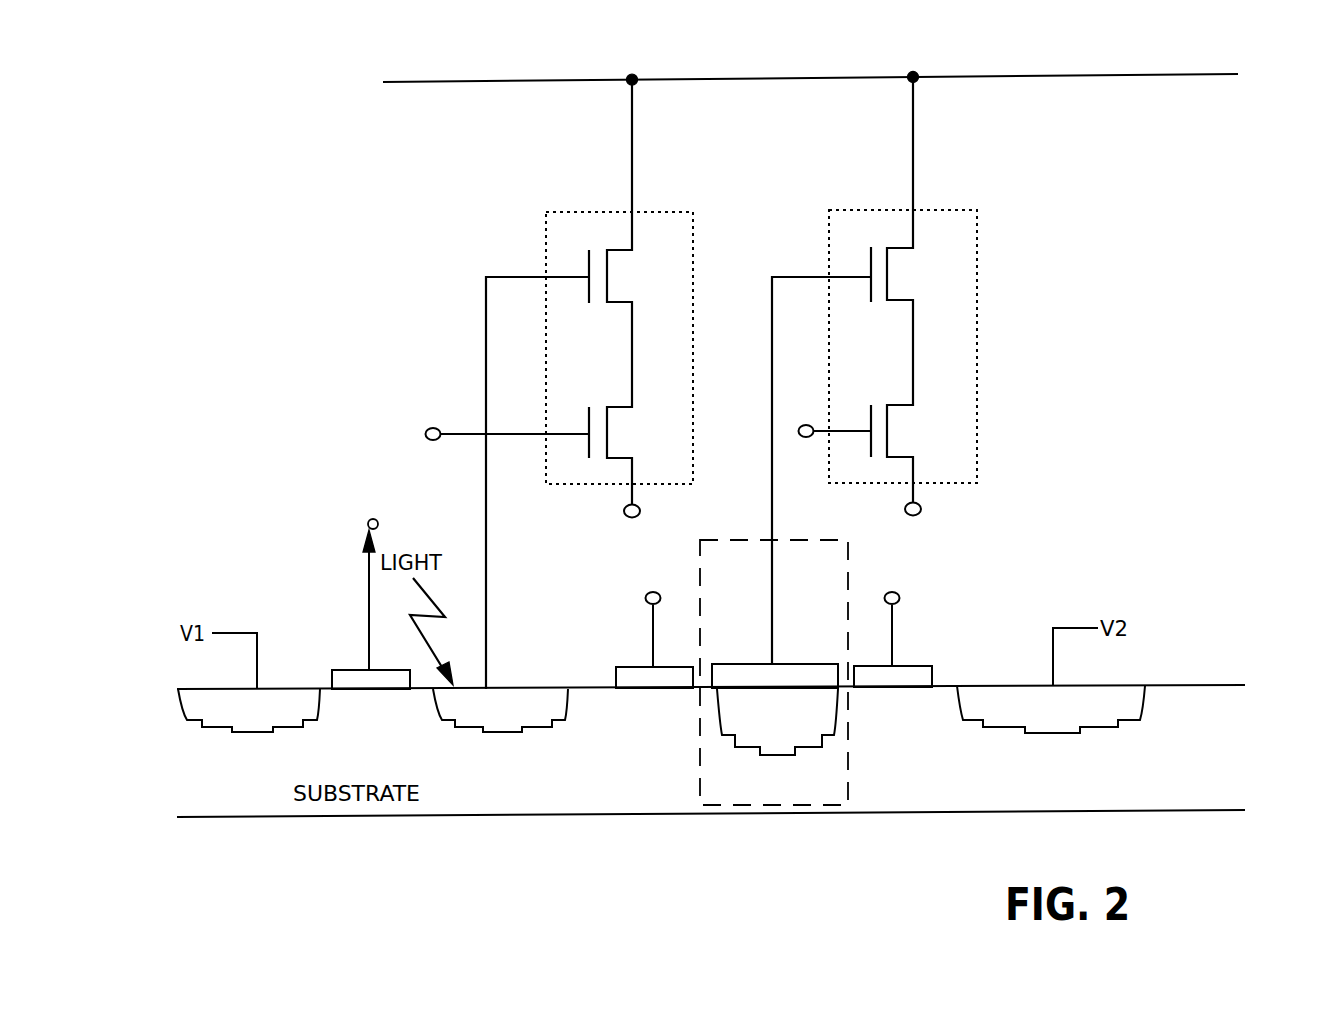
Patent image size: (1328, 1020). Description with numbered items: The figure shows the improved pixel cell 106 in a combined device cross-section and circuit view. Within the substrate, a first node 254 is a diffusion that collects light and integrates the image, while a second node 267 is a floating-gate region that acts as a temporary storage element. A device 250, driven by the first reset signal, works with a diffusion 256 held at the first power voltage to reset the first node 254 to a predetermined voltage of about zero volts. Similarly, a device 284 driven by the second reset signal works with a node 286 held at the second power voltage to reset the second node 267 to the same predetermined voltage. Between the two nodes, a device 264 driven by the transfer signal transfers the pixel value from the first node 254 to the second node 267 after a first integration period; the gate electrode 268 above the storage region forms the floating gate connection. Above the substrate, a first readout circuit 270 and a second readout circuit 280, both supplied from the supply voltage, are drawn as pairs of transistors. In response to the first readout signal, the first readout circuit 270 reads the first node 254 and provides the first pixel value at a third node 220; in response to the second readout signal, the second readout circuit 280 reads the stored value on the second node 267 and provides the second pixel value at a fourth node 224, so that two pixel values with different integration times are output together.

The pixel cell 106 is at (774, 80).
The third node 220 is at (640, 494).
The fourth node 224 is at (920, 492).
The device 250 is at (330, 680).
The first node 254 is at (506, 734).
The diffusion 256 is at (258, 733).
The device 264 is at (614, 678).
The second node 267 is at (776, 757).
The floating gate electrode FG 268 is at (720, 663).
The first readout circuit 270 is at (693, 226).
The second readout circuit 280 is at (977, 224).
The device 284 is at (918, 666).
The node 286 is at (1061, 735).